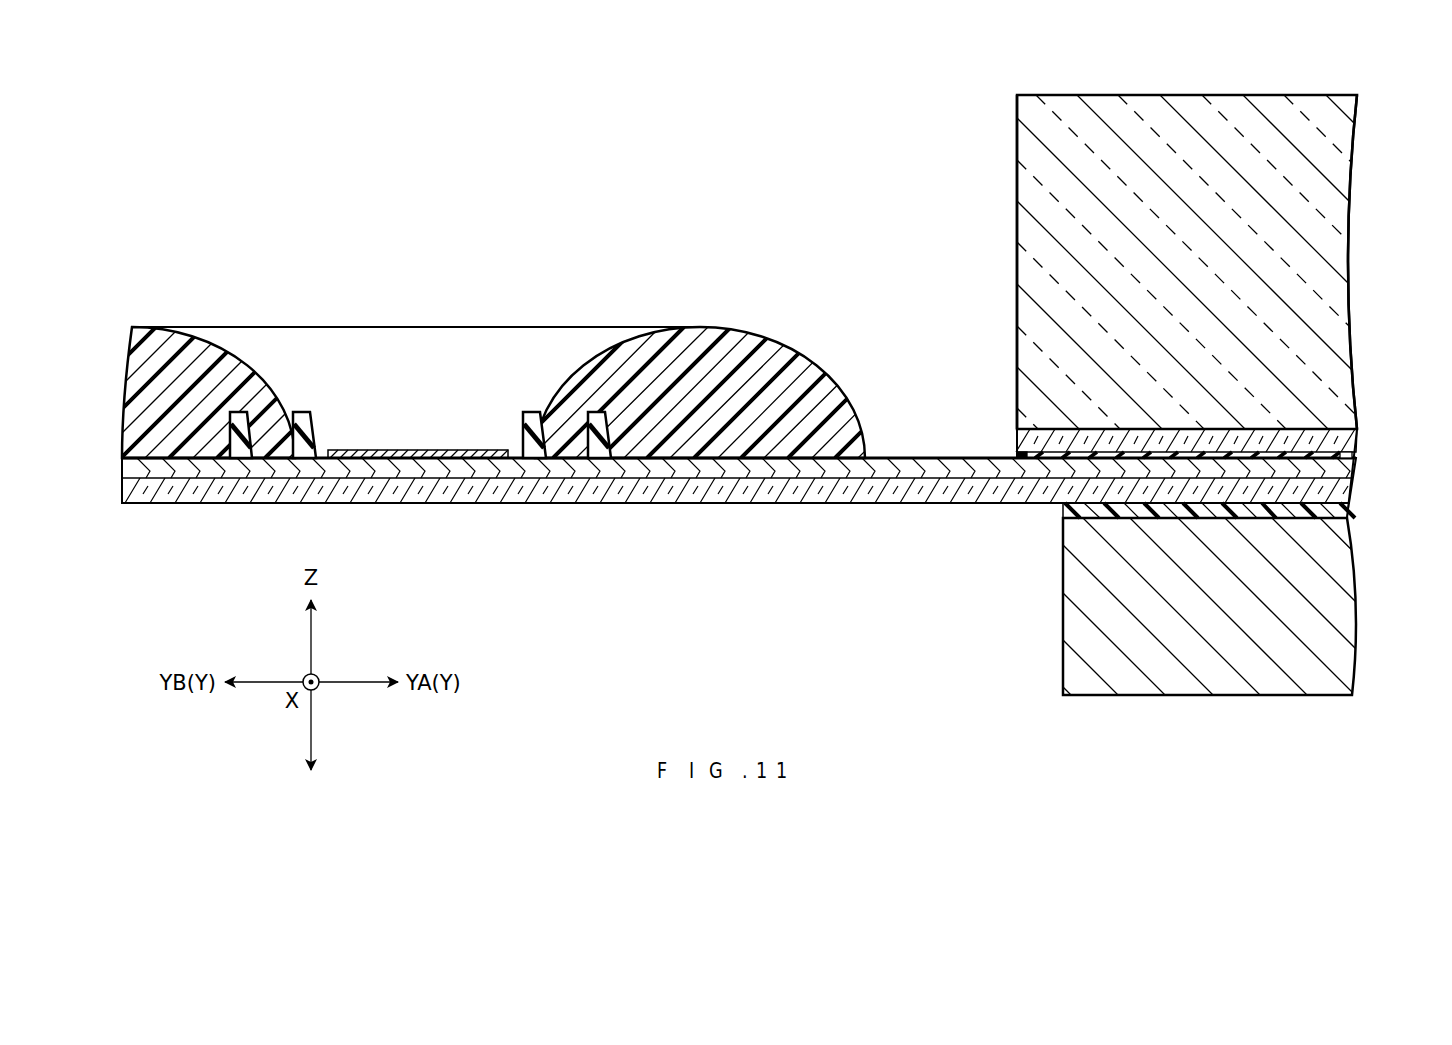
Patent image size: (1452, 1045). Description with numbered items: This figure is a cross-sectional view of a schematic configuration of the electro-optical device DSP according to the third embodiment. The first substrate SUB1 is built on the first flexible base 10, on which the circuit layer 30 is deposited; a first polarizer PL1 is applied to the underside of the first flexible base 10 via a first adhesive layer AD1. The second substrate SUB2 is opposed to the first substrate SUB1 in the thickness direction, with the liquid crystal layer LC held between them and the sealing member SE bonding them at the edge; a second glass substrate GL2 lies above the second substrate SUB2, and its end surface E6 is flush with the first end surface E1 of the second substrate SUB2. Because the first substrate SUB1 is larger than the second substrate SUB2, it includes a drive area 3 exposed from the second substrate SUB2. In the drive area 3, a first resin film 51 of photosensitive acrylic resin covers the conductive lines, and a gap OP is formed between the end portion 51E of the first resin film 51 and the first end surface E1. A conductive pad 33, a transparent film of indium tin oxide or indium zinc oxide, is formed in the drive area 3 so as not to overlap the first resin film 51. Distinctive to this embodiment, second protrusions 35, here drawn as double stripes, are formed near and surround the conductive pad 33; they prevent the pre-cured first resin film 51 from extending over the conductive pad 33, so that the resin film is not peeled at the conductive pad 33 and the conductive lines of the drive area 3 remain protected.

The drive area 3 is at (607, 532).
The first flexible base 10 is at (1338, 492).
The circuit layer 30 is at (1338, 470).
The first substrate SUB1 is at (1383, 462).
The second substrate SUB2 is at (1340, 441).
The cover glass GL2 is at (1348, 222).
The liquid crystal layer LC is at (1352, 457).
The sealing member SE is at (1020, 456).
The first end surface E1 is at (1017, 432).
The end surface E6 is at (1017, 220).
The electro-optical device DSP is at (1369, 391).
The first adhesive layer AD1 is at (1342, 512).
The first polarizer PL1 is at (1340, 623).
The gap OP is at (908, 421).
The first resin film 51 is at (489, 328).
The end portion of first resin film 51E is at (724, 360).
The second protrusions 35 is at (303, 420).
The conductive pad 33 is at (416, 452).